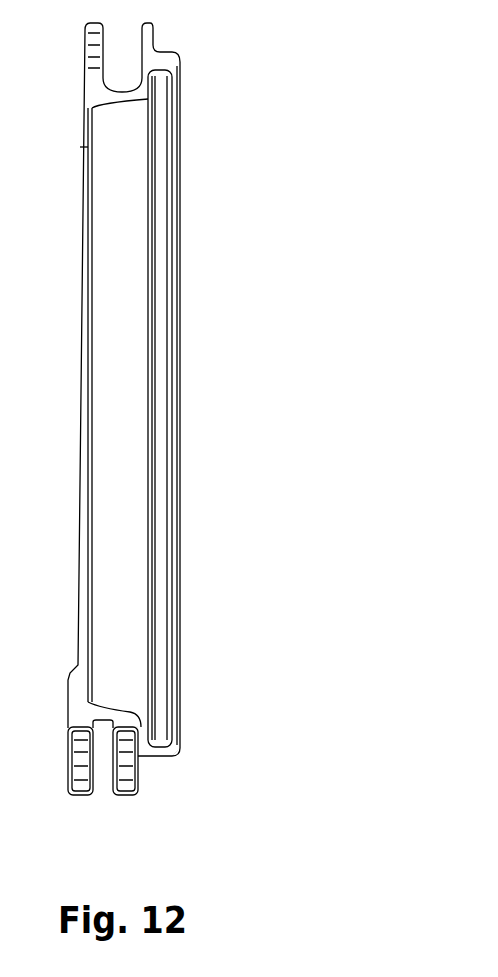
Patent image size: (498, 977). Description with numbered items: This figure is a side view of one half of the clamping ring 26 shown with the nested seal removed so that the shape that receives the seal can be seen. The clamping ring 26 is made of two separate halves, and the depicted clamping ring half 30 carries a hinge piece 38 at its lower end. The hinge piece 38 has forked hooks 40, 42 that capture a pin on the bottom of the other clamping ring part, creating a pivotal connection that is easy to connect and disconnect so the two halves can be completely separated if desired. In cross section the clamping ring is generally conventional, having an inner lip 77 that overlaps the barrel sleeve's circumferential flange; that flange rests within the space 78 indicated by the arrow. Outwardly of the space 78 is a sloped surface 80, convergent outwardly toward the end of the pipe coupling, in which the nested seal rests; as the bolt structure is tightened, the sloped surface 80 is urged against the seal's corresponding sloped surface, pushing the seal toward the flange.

The clamping ring 26 is at (181, 376).
The clamping ring half 30 is at (180, 83).
The hinge piece 38 is at (123, 797).
The forked hook 40 is at (78, 797).
The forked hook 42 is at (133, 777).
The inner lip 77 is at (178, 730).
The space 78 is at (155, 707).
The sloped surface 80 is at (118, 103).